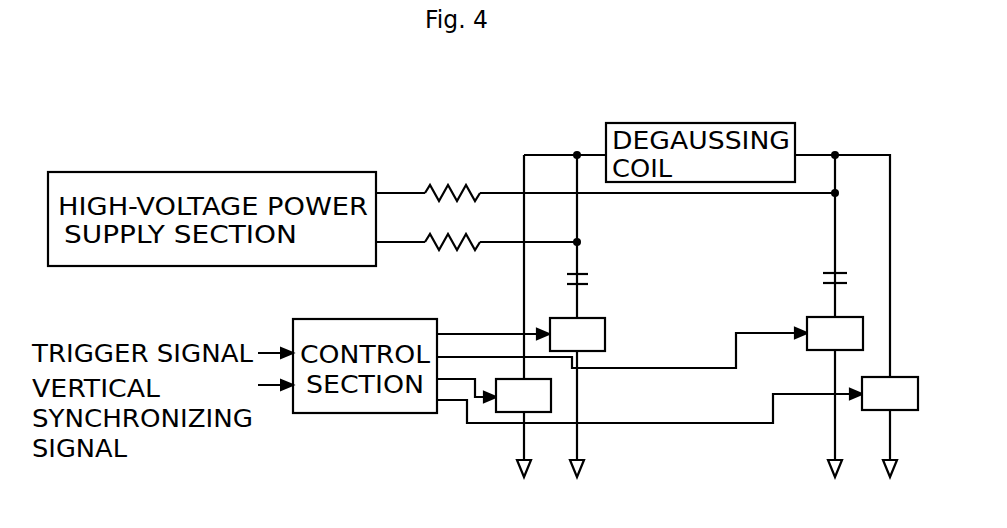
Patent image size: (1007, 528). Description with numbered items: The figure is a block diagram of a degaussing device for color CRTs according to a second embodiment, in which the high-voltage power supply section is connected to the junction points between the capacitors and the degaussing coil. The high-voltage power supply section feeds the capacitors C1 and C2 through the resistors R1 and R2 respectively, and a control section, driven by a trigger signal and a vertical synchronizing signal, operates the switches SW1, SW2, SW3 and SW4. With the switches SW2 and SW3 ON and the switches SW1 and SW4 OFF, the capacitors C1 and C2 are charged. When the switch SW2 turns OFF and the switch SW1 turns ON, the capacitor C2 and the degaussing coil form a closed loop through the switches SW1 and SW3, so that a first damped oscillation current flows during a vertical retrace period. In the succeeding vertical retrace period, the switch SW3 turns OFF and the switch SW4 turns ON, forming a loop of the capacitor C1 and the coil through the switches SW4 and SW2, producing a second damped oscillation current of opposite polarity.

The resistor R1 is at (452, 230).
The resistor R2 is at (452, 181).
The capacitor C1 is at (591, 281).
The capacitor C2 is at (849, 281).
The switch SW1 is at (523, 395).
The switch SW2 is at (577, 334).
The switch SW3 is at (835, 333).
The switch SW4 is at (890, 393).